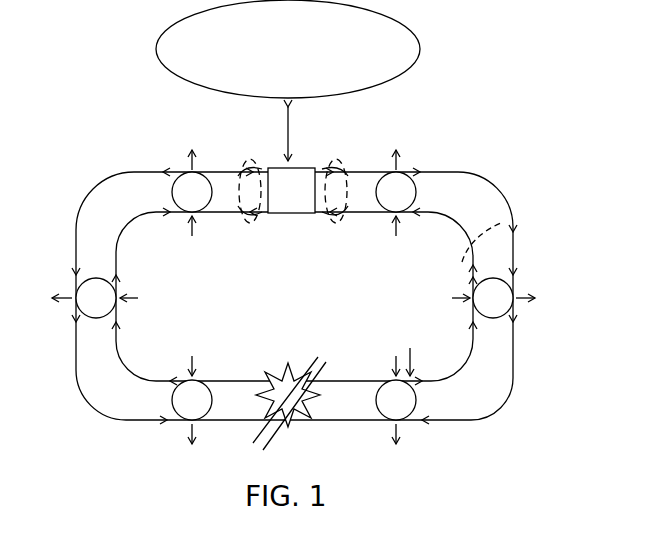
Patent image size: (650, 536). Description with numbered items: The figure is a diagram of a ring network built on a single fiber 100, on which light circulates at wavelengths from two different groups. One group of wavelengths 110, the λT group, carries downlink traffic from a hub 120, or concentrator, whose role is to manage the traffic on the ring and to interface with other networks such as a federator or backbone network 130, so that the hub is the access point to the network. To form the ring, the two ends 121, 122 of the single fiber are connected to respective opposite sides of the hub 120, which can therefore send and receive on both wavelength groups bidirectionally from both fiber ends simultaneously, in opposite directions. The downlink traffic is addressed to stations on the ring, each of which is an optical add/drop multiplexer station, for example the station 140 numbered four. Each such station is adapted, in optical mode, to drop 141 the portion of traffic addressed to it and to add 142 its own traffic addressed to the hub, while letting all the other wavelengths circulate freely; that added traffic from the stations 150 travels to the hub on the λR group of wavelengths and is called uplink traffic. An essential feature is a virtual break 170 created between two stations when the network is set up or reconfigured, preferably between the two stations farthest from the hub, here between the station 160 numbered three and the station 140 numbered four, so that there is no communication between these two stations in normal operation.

The single fiber 100 is at (320, 313).
The group of wavelengths λT 110 is at (503, 200).
The hub 120 is at (301, 169).
The first end of the single fiber 121 is at (243, 224).
The second end of the single fiber 122 is at (336, 224).
The backbone network 130 is at (418, 47).
The station numbered 4 140 is at (377, 398).
The drop 141 is at (412, 428).
The add 142 is at (410, 350).
The traffic from the stations 150 is at (470, 352).
The station numbered 3 160 is at (173, 402).
The virtual break 170 is at (268, 382).